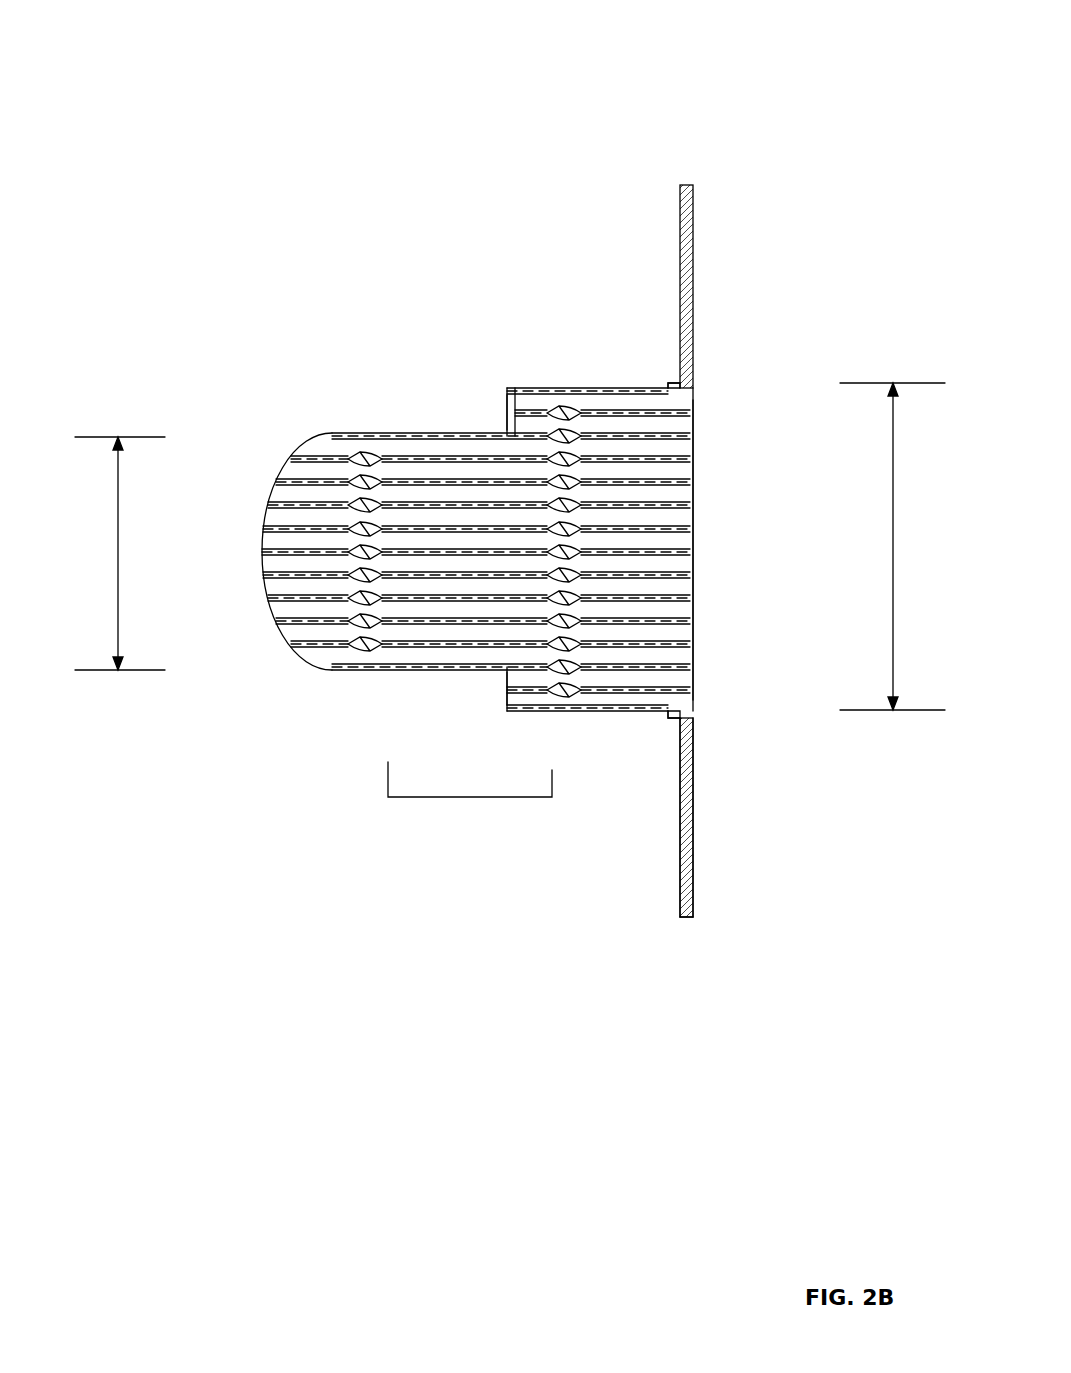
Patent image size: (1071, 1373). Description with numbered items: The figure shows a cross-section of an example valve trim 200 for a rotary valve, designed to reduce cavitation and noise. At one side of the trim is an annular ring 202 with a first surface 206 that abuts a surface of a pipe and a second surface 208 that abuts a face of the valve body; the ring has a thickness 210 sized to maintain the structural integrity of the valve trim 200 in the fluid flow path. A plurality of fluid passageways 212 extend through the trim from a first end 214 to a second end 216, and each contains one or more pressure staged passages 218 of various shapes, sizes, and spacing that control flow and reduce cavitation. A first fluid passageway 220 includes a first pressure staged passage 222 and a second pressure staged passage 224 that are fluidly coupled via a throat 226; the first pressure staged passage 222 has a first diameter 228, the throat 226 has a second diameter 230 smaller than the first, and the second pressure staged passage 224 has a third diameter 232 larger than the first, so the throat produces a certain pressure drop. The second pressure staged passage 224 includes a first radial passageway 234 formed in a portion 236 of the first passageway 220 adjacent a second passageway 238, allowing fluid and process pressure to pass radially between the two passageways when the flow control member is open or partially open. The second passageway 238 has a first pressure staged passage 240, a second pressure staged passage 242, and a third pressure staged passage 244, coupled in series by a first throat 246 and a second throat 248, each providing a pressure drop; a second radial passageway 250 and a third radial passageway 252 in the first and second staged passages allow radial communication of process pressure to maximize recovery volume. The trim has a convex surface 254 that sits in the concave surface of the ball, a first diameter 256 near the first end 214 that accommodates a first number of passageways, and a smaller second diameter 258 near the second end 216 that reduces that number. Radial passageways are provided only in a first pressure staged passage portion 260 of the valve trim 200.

The valve trim 200 is at (128, 43).
The annular ring 202 is at (680, 909).
The first surface 206 is at (693, 888).
The second surface 208 is at (680, 866).
The thickness 210 is at (693, 917).
The fluid passageways 212 is at (270, 560).
The first end 214 is at (693, 762).
The second end 216 is at (268, 540).
The pressure staged passages 218 is at (673, 540).
The first fluid passageway 220 is at (695, 430).
The first pressure staged passage 222 is at (653, 423).
The second pressure staged passage 224 is at (523, 420).
The throat 226 is at (572, 423).
The first diameter 228 is at (682, 418).
The second diameter 230 is at (540, 420).
The third diameter 232 is at (538, 408).
The first radial passageway 234 is at (545, 410).
The portion 236 is at (545, 438).
The second passageway 238 is at (697, 447).
The first pressure staged passage 240 is at (693, 432).
The second pressure staged passage 242 is at (422, 448).
The third pressure staged passage 244 is at (315, 440).
The first throat 246 is at (570, 448).
The second throat 248 is at (363, 442).
The second radial passageway 250 is at (670, 460).
The third radial passageway 252 is at (415, 462).
The convex surface 254 is at (275, 612).
The first diameter 256 is at (893, 638).
The second diameter 258 is at (118, 565).
The first pressure staged passage portion 260 is at (465, 797).